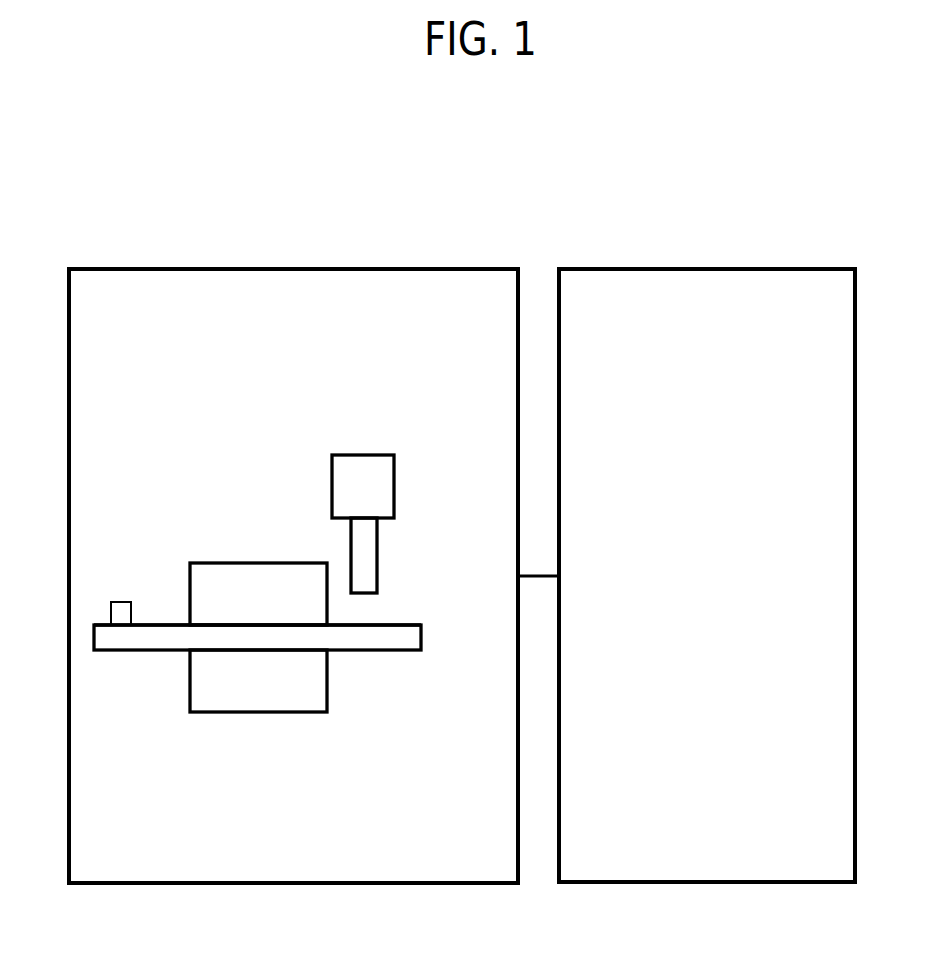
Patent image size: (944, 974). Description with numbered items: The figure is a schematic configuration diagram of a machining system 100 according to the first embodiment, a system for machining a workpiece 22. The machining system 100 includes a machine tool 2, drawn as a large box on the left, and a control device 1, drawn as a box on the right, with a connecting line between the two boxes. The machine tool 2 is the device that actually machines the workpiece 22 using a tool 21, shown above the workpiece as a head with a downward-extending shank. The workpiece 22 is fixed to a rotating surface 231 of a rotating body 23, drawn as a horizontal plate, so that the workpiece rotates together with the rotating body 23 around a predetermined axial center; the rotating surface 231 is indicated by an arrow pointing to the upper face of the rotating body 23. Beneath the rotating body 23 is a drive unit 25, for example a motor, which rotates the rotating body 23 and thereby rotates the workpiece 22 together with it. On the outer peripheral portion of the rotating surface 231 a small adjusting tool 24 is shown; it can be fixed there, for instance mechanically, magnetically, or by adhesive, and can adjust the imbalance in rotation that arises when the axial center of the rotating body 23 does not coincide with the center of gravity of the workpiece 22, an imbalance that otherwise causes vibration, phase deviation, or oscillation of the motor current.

The machining system 100 is at (512, 197).
The control device 1 is at (707, 575).
The machine tool 2 is at (293, 576).
The tool 21 is at (380, 492).
The workpiece 22 is at (252, 585).
The rotating body 23 is at (400, 637).
The rotating surface 231 is at (392, 610).
The adjusting tool 24 is at (122, 610).
The drive unit 25 is at (263, 702).